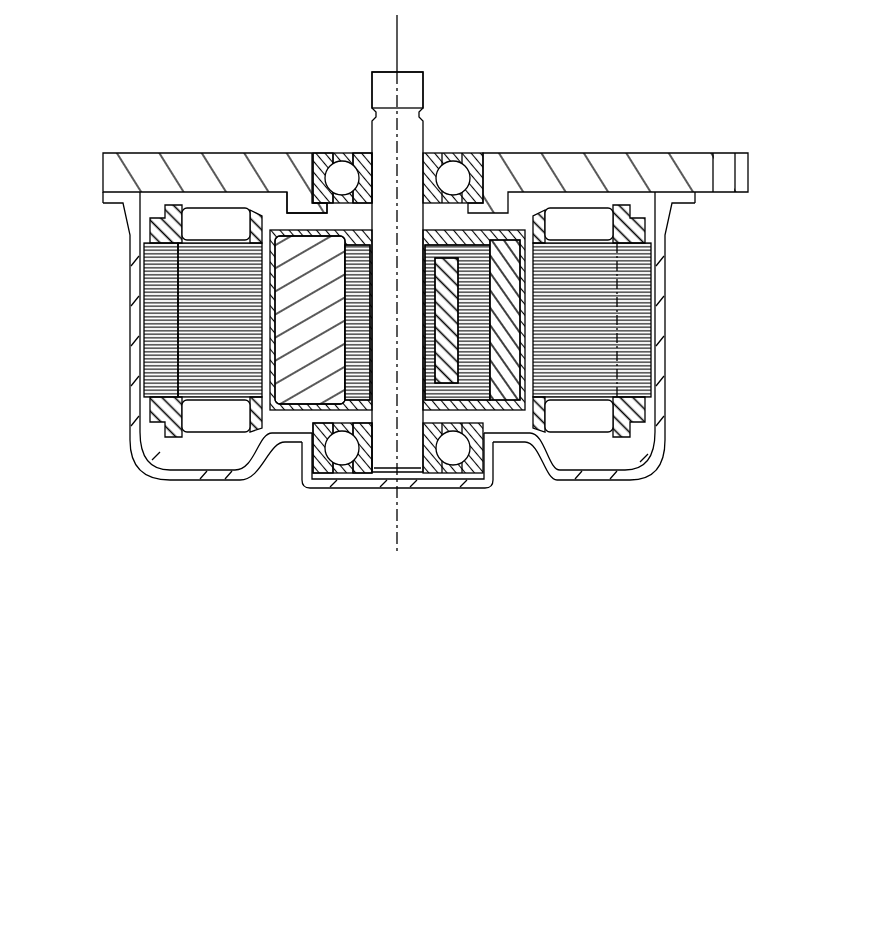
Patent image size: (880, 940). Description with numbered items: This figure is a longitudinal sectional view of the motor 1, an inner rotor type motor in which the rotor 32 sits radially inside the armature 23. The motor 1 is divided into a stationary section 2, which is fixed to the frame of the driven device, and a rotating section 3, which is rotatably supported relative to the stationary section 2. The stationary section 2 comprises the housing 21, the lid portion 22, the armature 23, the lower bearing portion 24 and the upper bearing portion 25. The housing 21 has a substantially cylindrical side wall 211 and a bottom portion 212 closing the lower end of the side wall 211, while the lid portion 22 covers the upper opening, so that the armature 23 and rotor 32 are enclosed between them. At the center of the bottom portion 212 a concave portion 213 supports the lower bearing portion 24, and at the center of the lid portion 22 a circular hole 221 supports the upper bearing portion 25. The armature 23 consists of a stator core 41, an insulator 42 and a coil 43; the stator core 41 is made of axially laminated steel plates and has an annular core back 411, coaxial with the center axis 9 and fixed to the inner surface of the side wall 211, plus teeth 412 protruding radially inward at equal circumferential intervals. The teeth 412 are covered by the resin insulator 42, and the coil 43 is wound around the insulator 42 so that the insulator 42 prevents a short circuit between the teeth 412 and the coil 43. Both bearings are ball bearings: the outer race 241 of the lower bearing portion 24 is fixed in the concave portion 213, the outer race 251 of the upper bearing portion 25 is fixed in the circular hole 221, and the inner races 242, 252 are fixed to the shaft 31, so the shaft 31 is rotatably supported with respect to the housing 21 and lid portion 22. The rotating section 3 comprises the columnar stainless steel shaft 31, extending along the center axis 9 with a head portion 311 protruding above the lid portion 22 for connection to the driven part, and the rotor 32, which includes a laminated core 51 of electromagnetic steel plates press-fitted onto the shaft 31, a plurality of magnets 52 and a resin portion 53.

The motor 1 is at (177, 126).
The center axis 9 is at (397, 40).
The stationary section 2 is at (573, 502).
The housing 21 is at (728, 536).
The side wall 211 is at (657, 397).
The bottom portion 212 is at (598, 478).
The concave portion 213 is at (487, 474).
The lid portion 22 is at (592, 172).
The circular hole 221 is at (311, 178).
The armature 23 is at (150, 572).
The lower bearing portion 24 is at (307, 542).
The outer race 241 is at (322, 463).
The inner race 242 is at (362, 463).
The upper bearing portion 25 is at (365, 82).
The outer race 251 is at (325, 163).
The inner race 252 is at (363, 163).
The rotating section 3 is at (527, 76).
The shaft 31 is at (408, 170).
The head portion 311 is at (412, 88).
The rotor 32 is at (520, 208).
The stator core 41 is at (135, 538).
The core back 411 is at (162, 345).
The teeth 412 is at (225, 345).
The insulator 42 is at (256, 432).
The coil 43 is at (233, 420).
The laminated core 51 is at (467, 327).
The magnets 52 is at (300, 308).
The resin portion 53 is at (505, 275).